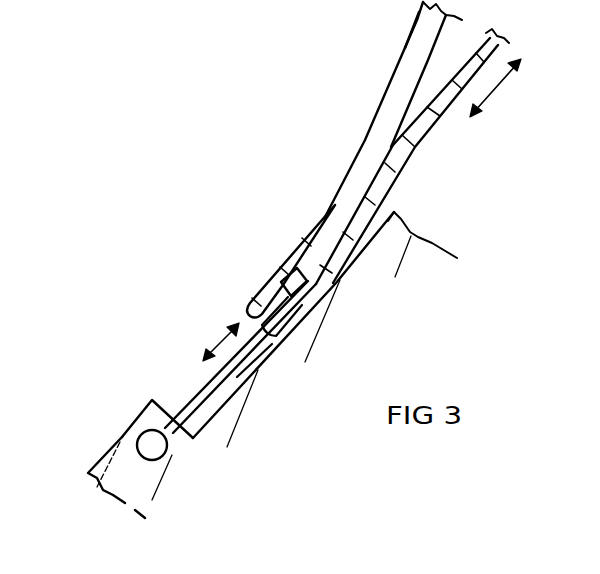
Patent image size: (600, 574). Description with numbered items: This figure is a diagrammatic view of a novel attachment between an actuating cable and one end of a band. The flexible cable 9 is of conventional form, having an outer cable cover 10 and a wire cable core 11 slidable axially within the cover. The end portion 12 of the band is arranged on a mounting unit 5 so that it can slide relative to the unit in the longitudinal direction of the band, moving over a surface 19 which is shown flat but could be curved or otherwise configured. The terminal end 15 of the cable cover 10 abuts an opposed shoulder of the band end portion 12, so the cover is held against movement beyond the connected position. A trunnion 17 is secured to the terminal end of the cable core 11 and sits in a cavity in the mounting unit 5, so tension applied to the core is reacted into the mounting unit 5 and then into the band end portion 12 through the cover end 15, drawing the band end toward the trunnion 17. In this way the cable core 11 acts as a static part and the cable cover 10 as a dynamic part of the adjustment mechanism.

The mounting unit 5 is at (338, 301).
The flexible cable 9 is at (384, 117).
The cable cover 10 is at (414, 41).
The cable core 11 is at (192, 399).
The end portion of the band 12 is at (273, 256).
The terminal end of the cable cover 15 is at (300, 283).
The trunnion 17 is at (150, 445).
The surface 19 is at (222, 395).